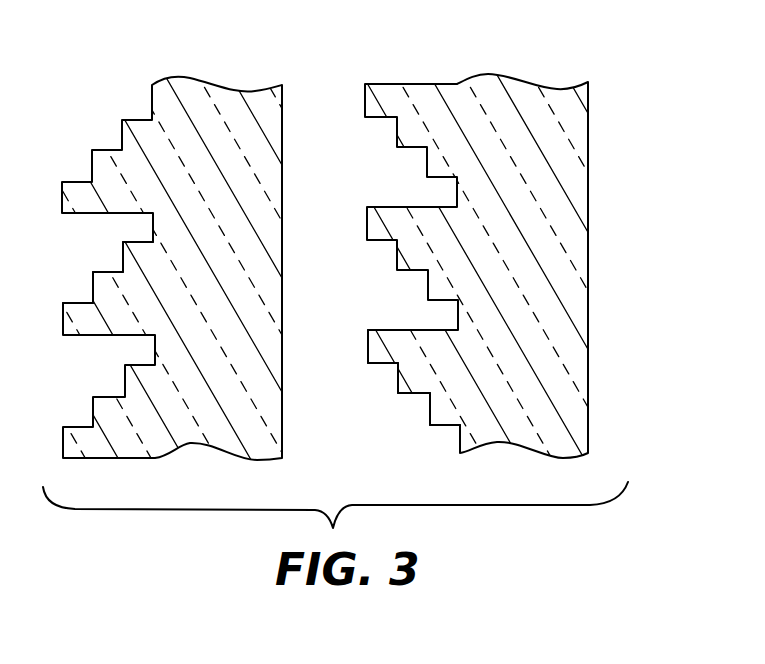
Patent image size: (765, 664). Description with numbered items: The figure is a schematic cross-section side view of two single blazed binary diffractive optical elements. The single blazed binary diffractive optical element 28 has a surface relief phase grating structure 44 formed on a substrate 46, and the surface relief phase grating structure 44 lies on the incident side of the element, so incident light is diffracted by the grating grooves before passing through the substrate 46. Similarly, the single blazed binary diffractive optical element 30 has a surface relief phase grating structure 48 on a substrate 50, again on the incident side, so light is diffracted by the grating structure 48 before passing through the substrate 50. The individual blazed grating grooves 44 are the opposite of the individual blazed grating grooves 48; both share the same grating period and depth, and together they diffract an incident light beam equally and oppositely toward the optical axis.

The single blazed binary diffractive optical element 28 is at (245, 235).
The single blazed binary diffractive optical element 30 is at (495, 235).
The surface relief phase grating structure 44 is at (92, 273).
The substrate 46 is at (271, 292).
The surface relief phase grating structure 48 is at (430, 425).
The substrate 50 is at (578, 304).